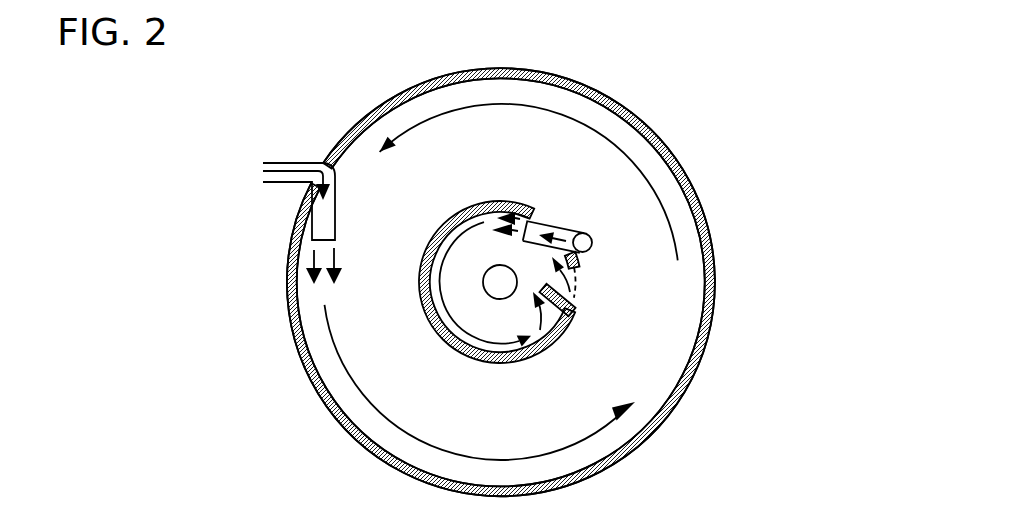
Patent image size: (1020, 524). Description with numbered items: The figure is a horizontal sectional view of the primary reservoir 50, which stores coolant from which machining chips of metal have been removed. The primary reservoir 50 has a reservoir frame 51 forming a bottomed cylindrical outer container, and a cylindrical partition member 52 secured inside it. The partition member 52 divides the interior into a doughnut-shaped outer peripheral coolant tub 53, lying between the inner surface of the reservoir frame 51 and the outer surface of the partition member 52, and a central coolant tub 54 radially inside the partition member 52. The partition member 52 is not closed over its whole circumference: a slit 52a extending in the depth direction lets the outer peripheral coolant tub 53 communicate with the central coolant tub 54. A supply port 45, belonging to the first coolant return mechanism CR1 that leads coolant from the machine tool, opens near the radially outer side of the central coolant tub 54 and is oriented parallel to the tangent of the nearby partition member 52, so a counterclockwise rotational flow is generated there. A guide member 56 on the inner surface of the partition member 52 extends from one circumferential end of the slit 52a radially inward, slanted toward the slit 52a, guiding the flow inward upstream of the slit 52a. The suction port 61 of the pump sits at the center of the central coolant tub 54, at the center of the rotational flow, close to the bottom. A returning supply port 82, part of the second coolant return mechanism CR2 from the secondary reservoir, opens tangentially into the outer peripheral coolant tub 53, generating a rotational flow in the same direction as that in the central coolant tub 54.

The supply port 45 is at (530, 222).
The primary reservoir 50 is at (666, 133).
The reservoir frame 51 is at (692, 195).
The partition member 52 is at (543, 351).
The slit 52a is at (579, 268).
The outer peripheral coolant tub 53 is at (395, 127).
The central coolant tub 54 is at (468, 247).
The guide member 56 is at (556, 290).
The suction port 61 is at (483, 287).
The returning supply port 82 is at (314, 228).
The first coolant return mechanism CR1 is at (573, 212).
The second coolant return mechanism CR2 is at (282, 186).